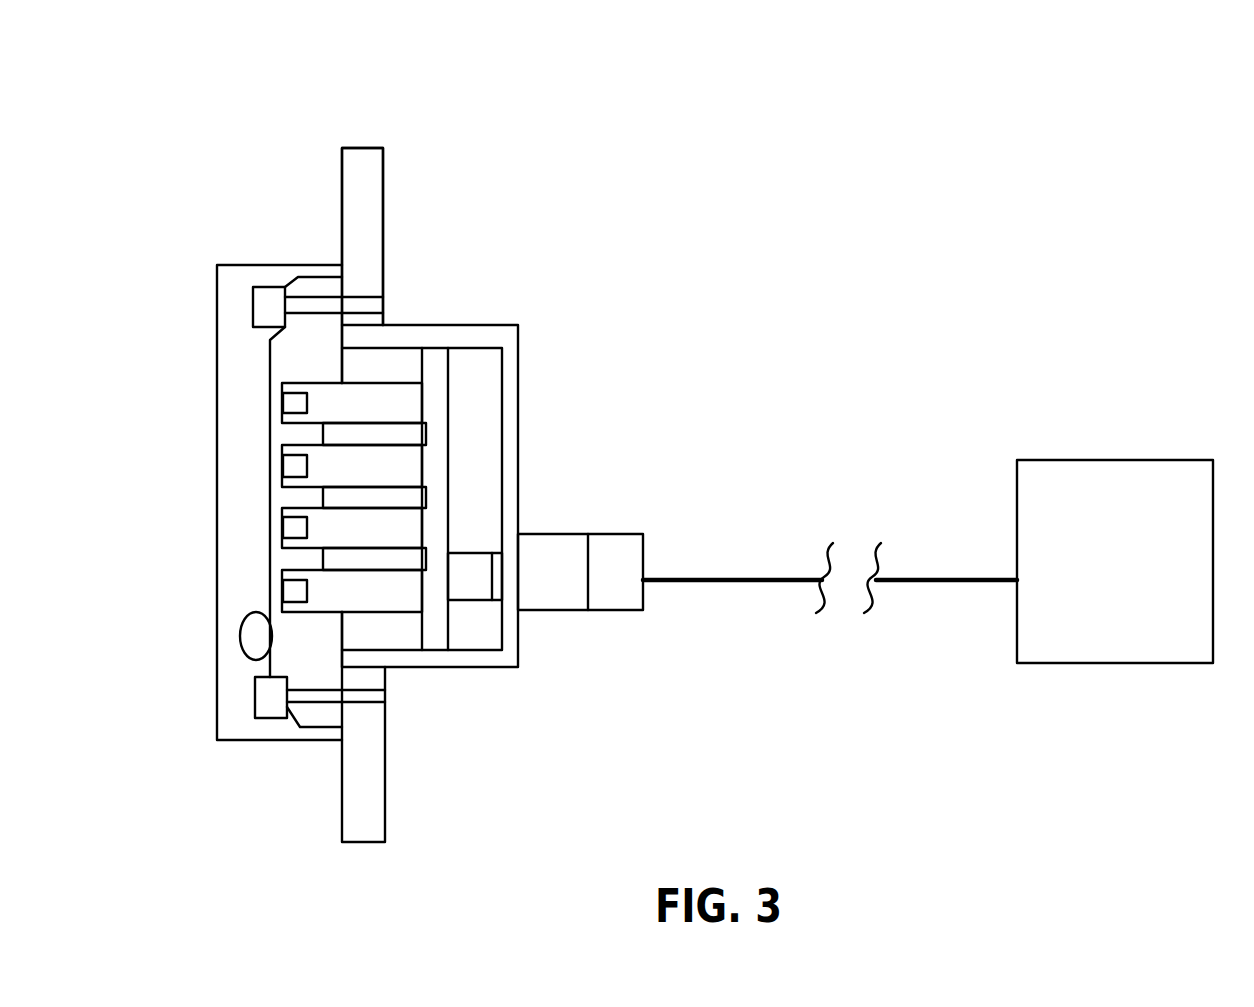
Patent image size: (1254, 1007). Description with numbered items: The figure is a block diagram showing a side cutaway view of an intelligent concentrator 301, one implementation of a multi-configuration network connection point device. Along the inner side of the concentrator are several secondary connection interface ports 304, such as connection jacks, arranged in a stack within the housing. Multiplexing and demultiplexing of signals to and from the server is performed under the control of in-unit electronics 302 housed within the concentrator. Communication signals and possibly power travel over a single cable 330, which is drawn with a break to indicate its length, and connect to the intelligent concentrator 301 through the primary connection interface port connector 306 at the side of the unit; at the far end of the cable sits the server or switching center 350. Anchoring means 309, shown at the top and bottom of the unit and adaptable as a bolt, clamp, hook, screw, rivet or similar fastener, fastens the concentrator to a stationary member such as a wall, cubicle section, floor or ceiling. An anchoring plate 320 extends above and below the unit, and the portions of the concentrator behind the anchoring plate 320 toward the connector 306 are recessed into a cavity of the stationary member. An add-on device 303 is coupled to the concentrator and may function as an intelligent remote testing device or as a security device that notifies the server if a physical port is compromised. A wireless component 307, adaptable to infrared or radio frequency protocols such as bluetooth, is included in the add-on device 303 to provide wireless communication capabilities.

The intelligent concentrator 301 is at (449, 264).
The in-unit electronics 302 is at (474, 474).
The add-on device 303 is at (222, 455).
The secondary connection interface ports 304 is at (264, 490).
The primary connection interface port connector 306 is at (634, 521).
The wireless component 307 is at (182, 677).
The anchoring means 309 is at (404, 498).
The anchoring plate 320 is at (439, 477).
The single cable 330 is at (871, 501).
The server or switching center 350 is at (1094, 614).